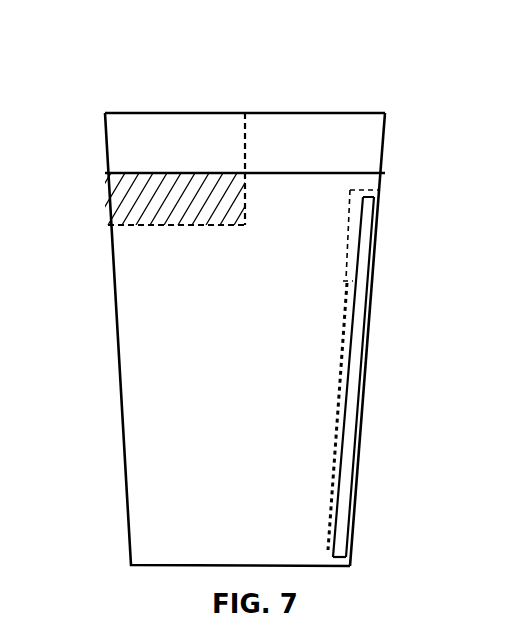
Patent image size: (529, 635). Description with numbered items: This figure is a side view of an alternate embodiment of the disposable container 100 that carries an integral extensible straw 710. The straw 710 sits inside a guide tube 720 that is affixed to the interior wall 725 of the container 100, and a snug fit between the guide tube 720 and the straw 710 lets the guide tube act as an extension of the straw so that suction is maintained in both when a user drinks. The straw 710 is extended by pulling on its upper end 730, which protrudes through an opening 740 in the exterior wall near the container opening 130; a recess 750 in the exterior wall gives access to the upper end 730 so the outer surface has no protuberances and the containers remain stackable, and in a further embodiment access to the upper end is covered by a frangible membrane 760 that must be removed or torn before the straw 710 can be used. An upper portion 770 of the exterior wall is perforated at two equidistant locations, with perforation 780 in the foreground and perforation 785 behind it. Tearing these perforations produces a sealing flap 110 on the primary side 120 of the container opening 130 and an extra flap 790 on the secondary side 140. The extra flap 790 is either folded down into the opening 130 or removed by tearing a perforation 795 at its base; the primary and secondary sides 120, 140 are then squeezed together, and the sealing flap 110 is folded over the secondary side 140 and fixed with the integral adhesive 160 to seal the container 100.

The disposable container 100 is at (118, 372).
The sealing flap 110 is at (320, 134).
The primary side 120 is at (385, 152).
The container opening 130 is at (259, 99).
The secondary side 140 is at (107, 197).
The integral adhesive 160 is at (172, 196).
The extensible straw 710 is at (353, 410).
The guide tube 720 is at (333, 431).
The interior wall 725 is at (345, 560).
The upper end 730 is at (377, 191).
The opening 740 is at (383, 280).
The recess 750 is at (346, 240).
The frangible membrane 760 is at (383, 250).
The upper portion 770 is at (138, 143).
The perforation 780 is at (245, 162).
The perforation 785 is at (235, 122).
The extra flap 790 is at (103, 125).
The perforation 795 is at (140, 172).